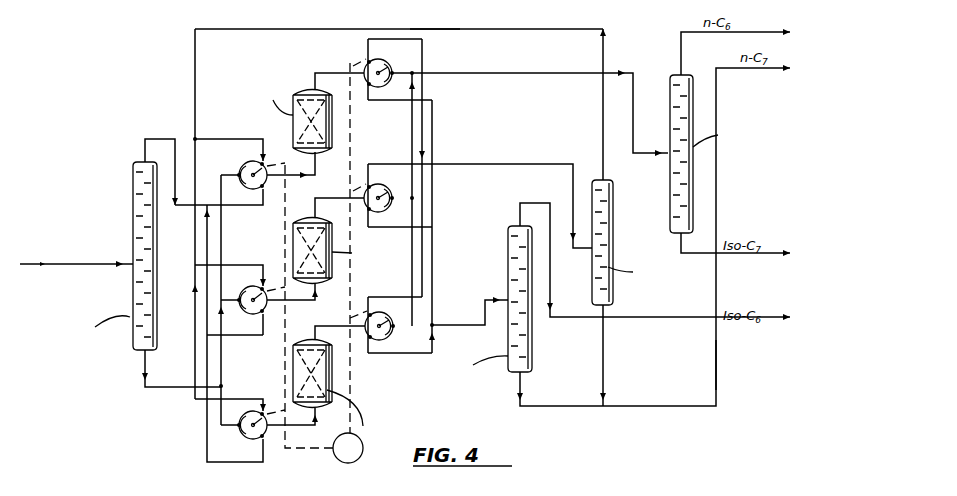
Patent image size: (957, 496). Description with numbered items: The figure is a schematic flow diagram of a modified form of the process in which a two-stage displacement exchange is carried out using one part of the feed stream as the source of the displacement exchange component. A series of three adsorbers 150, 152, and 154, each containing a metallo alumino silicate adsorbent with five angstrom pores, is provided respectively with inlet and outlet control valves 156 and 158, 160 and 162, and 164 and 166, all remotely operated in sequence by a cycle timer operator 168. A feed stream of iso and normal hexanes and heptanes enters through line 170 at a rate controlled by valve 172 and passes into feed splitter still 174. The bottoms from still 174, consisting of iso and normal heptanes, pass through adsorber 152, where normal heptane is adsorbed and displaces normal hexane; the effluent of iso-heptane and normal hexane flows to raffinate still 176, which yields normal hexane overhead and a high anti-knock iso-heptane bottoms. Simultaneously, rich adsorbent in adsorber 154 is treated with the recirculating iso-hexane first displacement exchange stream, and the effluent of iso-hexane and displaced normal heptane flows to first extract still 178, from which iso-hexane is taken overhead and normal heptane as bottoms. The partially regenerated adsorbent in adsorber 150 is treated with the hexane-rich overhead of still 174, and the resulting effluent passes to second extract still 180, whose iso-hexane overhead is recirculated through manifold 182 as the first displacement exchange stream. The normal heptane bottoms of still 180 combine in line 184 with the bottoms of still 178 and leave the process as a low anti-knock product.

The adsorber 150 is at (302, 90).
The adsorber 152 is at (293, 228).
The adsorber 154 is at (297, 353).
The inlet control valve 156 is at (248, 162).
The outlet control valve 158 is at (400, 62).
The inlet control valve 160 is at (258, 287).
The outlet control valve 162 is at (392, 187).
The inlet control valve 164 is at (245, 442).
The outlet control valve 166 is at (382, 343).
The cycle timer operator 168 is at (347, 463).
The line 170 is at (30, 266).
The valve 172 is at (52, 263).
The feed splitter still 174 is at (133, 178).
The raffinate still 176 is at (682, 80).
The first extract still 178 is at (508, 233).
The second extract still 180 is at (607, 197).
The manifold 182 is at (457, 29).
The line 184 is at (716, 363).